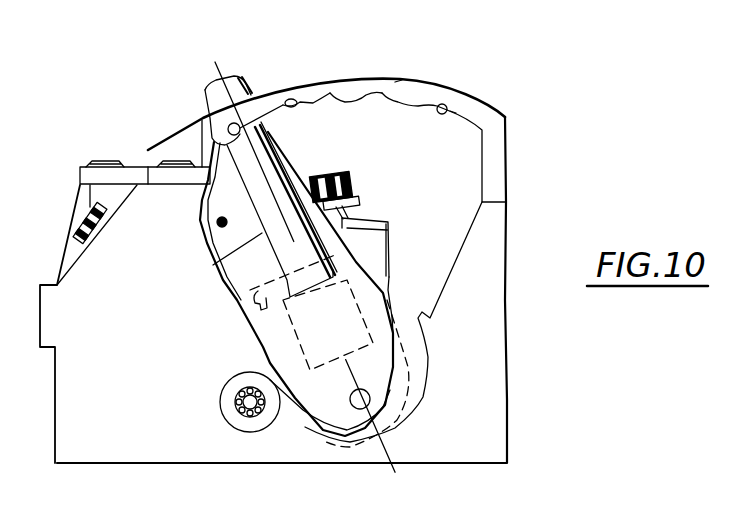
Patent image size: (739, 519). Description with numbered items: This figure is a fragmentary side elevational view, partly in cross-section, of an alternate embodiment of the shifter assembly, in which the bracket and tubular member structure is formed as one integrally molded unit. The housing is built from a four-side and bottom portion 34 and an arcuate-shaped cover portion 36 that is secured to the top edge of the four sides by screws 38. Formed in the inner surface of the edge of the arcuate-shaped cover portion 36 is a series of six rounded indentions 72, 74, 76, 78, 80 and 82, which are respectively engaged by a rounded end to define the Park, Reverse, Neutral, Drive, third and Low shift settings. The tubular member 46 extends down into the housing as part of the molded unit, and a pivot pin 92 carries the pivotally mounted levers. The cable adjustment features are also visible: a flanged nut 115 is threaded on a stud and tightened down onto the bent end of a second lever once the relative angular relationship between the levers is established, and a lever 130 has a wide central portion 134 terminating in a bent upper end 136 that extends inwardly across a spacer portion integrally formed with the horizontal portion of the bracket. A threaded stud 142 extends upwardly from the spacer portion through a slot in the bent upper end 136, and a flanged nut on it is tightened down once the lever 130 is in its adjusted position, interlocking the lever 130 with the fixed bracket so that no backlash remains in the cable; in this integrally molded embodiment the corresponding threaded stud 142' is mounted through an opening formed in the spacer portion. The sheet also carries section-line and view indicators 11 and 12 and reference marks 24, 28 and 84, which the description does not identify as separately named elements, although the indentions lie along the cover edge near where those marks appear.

In FIG. 10, the section line 11- 11 is at (213, 63).
In FIG. 10, the view arrow 12 is at (302, 113).
In FIG. 10, the locking disc 24 is at (237, 84).
The pivot pin 28 is at (371, 397).
In FIG. 10, the four-side and bottom portion 34 is at (500, 336).
In FIG. 10, the arcuate-shaped cover portion 36 is at (452, 88).
In FIG. 10, the screws 38 is at (150, 156).
In FIG. 10, the tubular member 46 is at (233, 264).
In FIG. 10, the rounded indention 72 is at (203, 120).
In FIG. 10, the rounded indention 74 is at (286, 92).
In FIG. 10, the rounded indention 76 is at (325, 90).
In FIG. 10, the rounded indention 78 is at (383, 86).
In FIG. 10, the rounded indention 80 is at (400, 104).
In FIG. 10, the rounded indention 82 is at (448, 113).
In FIG. 10, the ring segment 84 is at (400, 81).
The pivot pin 92 is at (240, 401).
In FIG. 10, the flanged nut 115 is at (85, 217).
The lever 130 is at (391, 275).
The wide central portion 134 is at (392, 243).
The bent upper end 136 is at (378, 219).
The threaded stud 142 is at (357, 182).
The threaded stud 142' is at (698, 508).